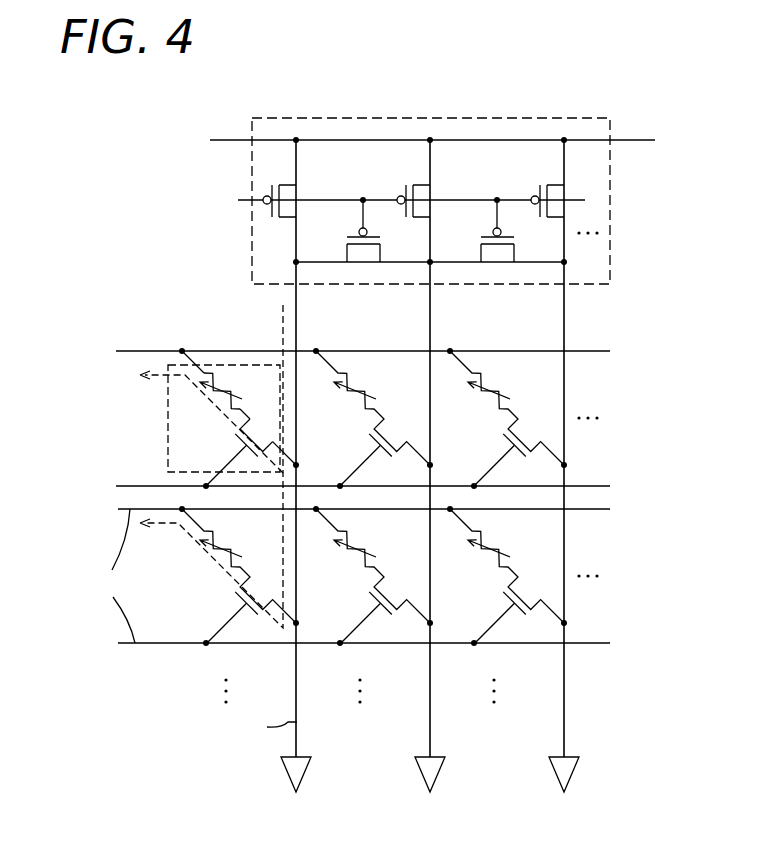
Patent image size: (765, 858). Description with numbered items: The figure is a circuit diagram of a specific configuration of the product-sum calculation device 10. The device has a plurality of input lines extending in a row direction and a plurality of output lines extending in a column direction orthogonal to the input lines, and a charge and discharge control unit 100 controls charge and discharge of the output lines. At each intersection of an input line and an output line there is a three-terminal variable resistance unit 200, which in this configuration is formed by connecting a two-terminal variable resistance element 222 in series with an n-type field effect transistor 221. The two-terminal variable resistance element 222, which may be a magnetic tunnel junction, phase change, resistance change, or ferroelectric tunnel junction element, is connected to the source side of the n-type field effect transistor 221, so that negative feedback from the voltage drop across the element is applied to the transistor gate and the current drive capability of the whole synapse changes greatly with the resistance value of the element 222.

The product-sum calculation device 10 is at (477, 52).
The charge and discharge control unit 100 is at (503, 117).
The variable resistance unit 200 is at (168, 405).
The n-type field effect transistor 221 is at (237, 442).
The two-terminal variable resistance element 222 is at (223, 380).